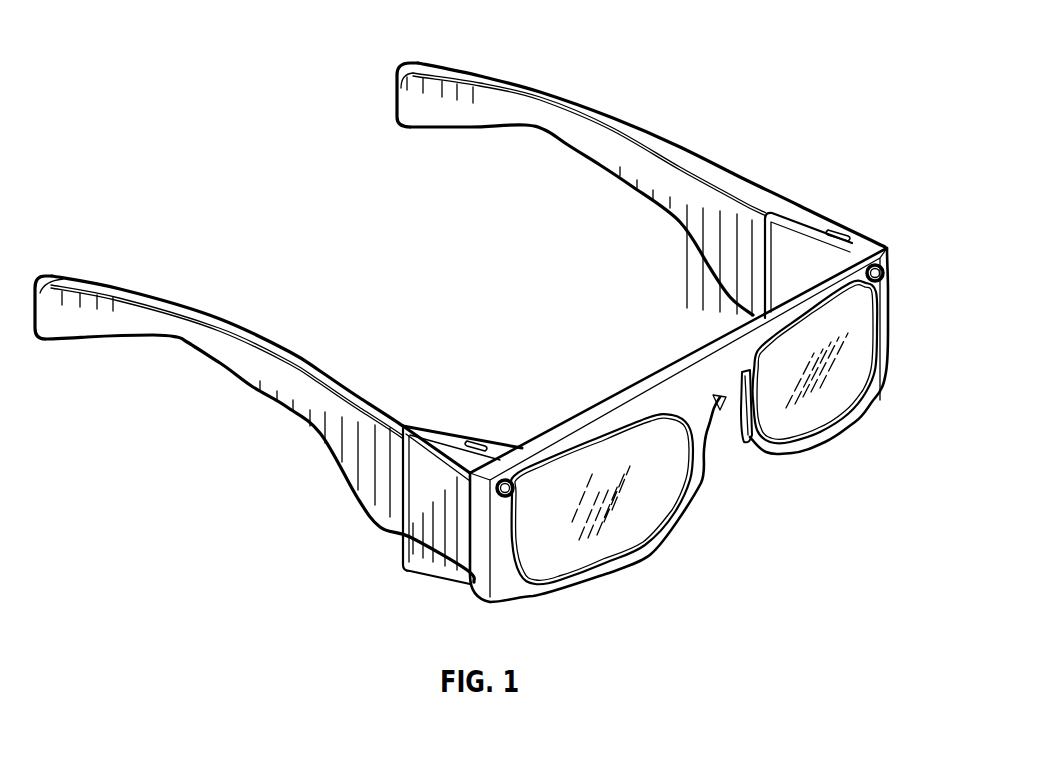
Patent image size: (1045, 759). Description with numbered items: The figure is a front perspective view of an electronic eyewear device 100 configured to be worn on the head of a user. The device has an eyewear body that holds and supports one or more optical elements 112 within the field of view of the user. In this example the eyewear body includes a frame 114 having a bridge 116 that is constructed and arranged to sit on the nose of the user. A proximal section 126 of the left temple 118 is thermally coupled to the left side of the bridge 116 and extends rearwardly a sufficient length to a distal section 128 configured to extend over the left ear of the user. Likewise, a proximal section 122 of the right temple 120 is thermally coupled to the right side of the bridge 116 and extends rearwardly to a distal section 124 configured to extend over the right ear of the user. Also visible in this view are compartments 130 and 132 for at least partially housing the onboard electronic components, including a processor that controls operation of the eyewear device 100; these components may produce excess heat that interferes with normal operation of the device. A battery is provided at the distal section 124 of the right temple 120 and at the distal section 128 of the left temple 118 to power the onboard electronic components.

The electronic eyewear device 100 is at (308, 192).
The optical elements 112 is at (848, 364).
The frame 114 is at (886, 247).
The bridge 116 is at (694, 360).
The left temple 118 is at (666, 141).
The right temple 120 is at (213, 319).
The proximal section of the right temple 122 is at (431, 426).
The distal section of the right temple 124 is at (80, 282).
The proximal section of the left temple 126 is at (767, 210).
The distal section of the left temple 128 is at (494, 85).
The compartment 130 is at (818, 218).
The compartment 132 is at (428, 538).